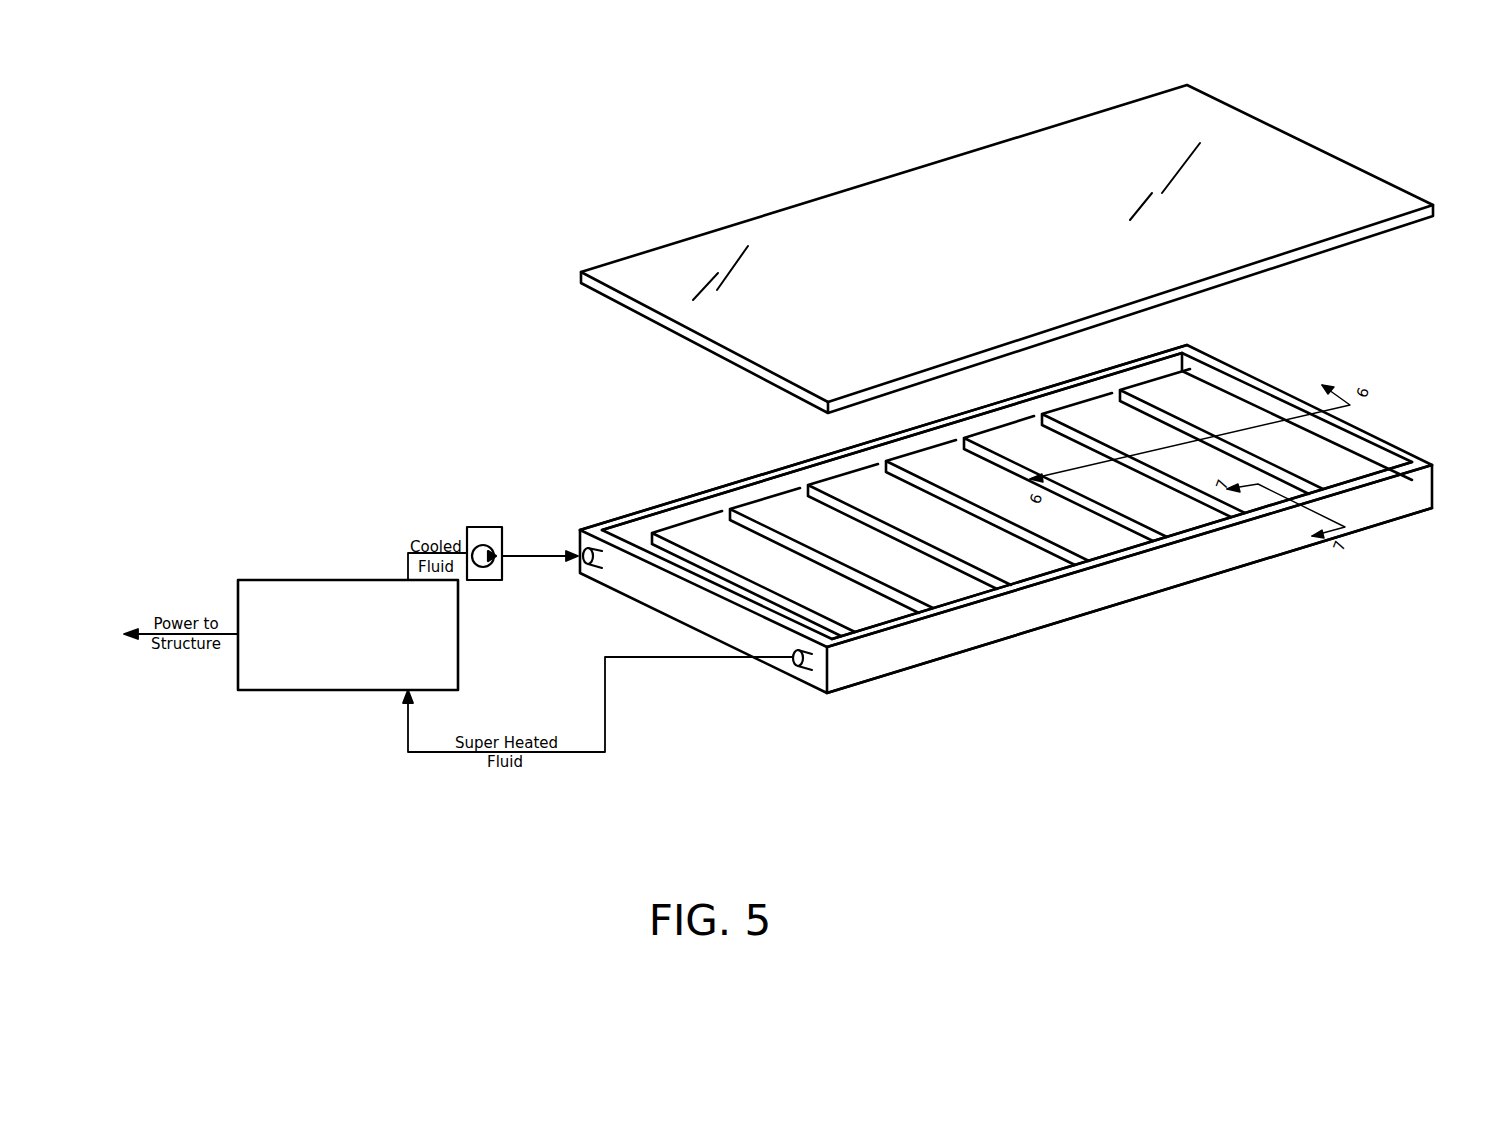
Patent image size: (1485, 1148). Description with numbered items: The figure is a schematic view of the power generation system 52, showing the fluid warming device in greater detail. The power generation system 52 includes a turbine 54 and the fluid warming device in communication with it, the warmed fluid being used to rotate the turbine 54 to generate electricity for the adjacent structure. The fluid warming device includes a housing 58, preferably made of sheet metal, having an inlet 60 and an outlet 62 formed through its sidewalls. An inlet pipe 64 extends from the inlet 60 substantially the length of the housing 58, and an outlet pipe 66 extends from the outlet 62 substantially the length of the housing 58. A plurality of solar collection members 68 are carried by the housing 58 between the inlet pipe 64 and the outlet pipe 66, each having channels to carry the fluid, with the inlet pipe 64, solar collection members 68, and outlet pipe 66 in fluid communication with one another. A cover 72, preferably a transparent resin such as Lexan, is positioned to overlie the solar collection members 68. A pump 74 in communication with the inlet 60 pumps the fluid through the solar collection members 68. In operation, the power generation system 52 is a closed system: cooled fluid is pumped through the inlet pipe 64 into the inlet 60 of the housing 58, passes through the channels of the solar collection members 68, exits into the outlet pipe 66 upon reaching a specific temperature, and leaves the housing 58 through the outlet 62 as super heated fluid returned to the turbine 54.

The power generation system 52 is at (298, 284).
The turbine 54 is at (268, 580).
The housing 58 is at (1383, 440).
The inlet 60 is at (583, 550).
The outlet 62 is at (793, 665).
The inlet pipe 64 is at (720, 498).
The outlet pipe 66 is at (885, 628).
The solar collection members 68 is at (1082, 412).
The cover 72 is at (930, 180).
The pump 74 is at (478, 527).